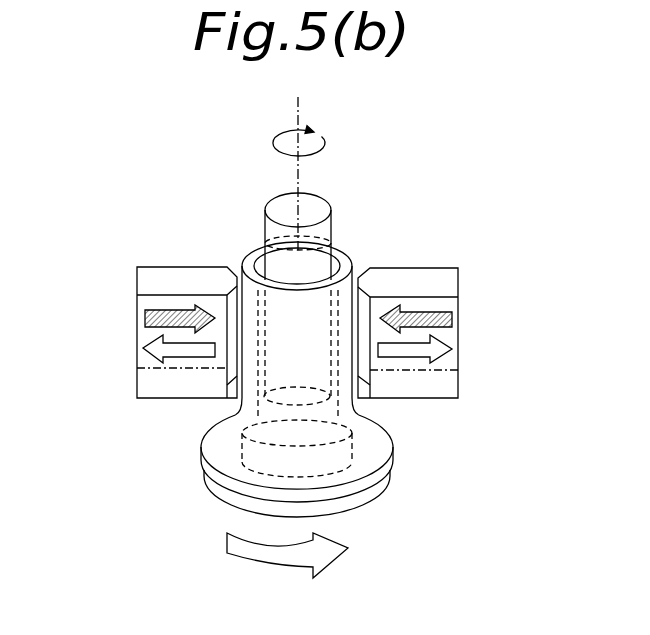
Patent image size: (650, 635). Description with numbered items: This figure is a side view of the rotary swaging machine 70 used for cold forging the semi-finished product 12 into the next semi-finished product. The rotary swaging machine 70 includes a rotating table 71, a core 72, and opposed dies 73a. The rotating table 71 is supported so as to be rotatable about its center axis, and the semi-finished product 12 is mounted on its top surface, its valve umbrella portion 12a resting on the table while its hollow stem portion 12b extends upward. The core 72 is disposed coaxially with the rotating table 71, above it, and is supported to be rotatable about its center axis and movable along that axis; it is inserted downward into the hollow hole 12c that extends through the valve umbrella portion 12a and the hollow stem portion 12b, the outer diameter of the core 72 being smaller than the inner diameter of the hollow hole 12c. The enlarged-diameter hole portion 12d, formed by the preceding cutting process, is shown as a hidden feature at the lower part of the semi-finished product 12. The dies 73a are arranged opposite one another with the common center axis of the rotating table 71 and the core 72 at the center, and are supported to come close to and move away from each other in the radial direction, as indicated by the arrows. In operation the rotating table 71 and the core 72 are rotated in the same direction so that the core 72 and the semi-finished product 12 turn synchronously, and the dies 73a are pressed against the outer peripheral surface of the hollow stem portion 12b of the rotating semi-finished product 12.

The rotary swaging machine 70 is at (378, 186).
The rotating table 71 is at (378, 495).
The core 72 is at (278, 210).
The die 73a is at (160, 265).
The semi-finished product 12 is at (242, 253).
The valve umbrella portion 12a is at (200, 445).
The hollow stem portion 12b is at (355, 406).
The hollow hole 12c is at (322, 262).
The enlarged-diameter hole portion 12d is at (360, 480).